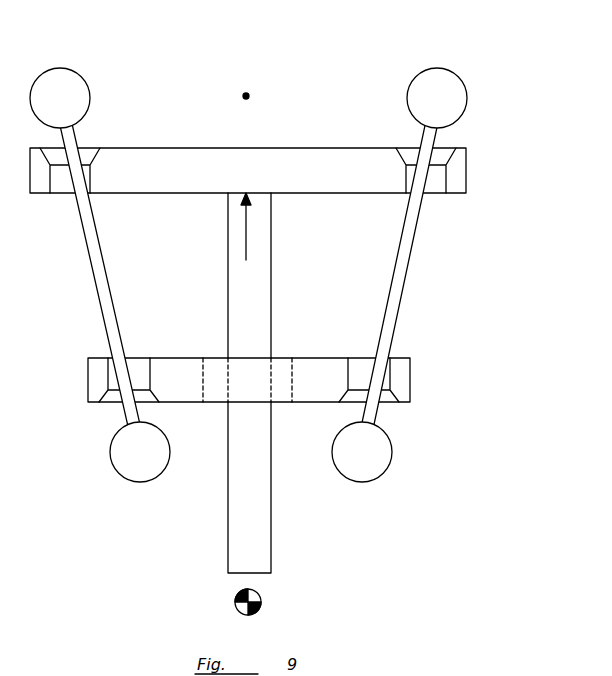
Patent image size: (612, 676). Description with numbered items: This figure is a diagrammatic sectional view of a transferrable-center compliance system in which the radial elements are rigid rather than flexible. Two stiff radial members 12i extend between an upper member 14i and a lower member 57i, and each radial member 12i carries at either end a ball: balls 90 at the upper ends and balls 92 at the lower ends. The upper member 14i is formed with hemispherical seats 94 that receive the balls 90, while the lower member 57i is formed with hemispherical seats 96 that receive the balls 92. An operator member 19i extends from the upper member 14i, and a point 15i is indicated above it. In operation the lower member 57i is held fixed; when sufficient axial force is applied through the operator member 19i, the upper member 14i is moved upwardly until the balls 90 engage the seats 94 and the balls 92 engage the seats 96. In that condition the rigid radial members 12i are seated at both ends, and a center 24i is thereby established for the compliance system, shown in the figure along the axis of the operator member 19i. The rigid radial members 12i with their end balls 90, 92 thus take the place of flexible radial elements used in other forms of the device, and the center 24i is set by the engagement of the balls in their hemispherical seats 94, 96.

The balls 90 is at (62, 68).
The balls 92 is at (140, 478).
The hemispherical seats 94 is at (92, 147).
The hemispherical seats 96 is at (106, 402).
The radial members 12i is at (105, 262).
The member 14i is at (281, 147).
The pivot point 15i is at (246, 96).
The operator member 19i is at (272, 543).
The center 24i is at (247, 240).
The member 57i is at (334, 356).